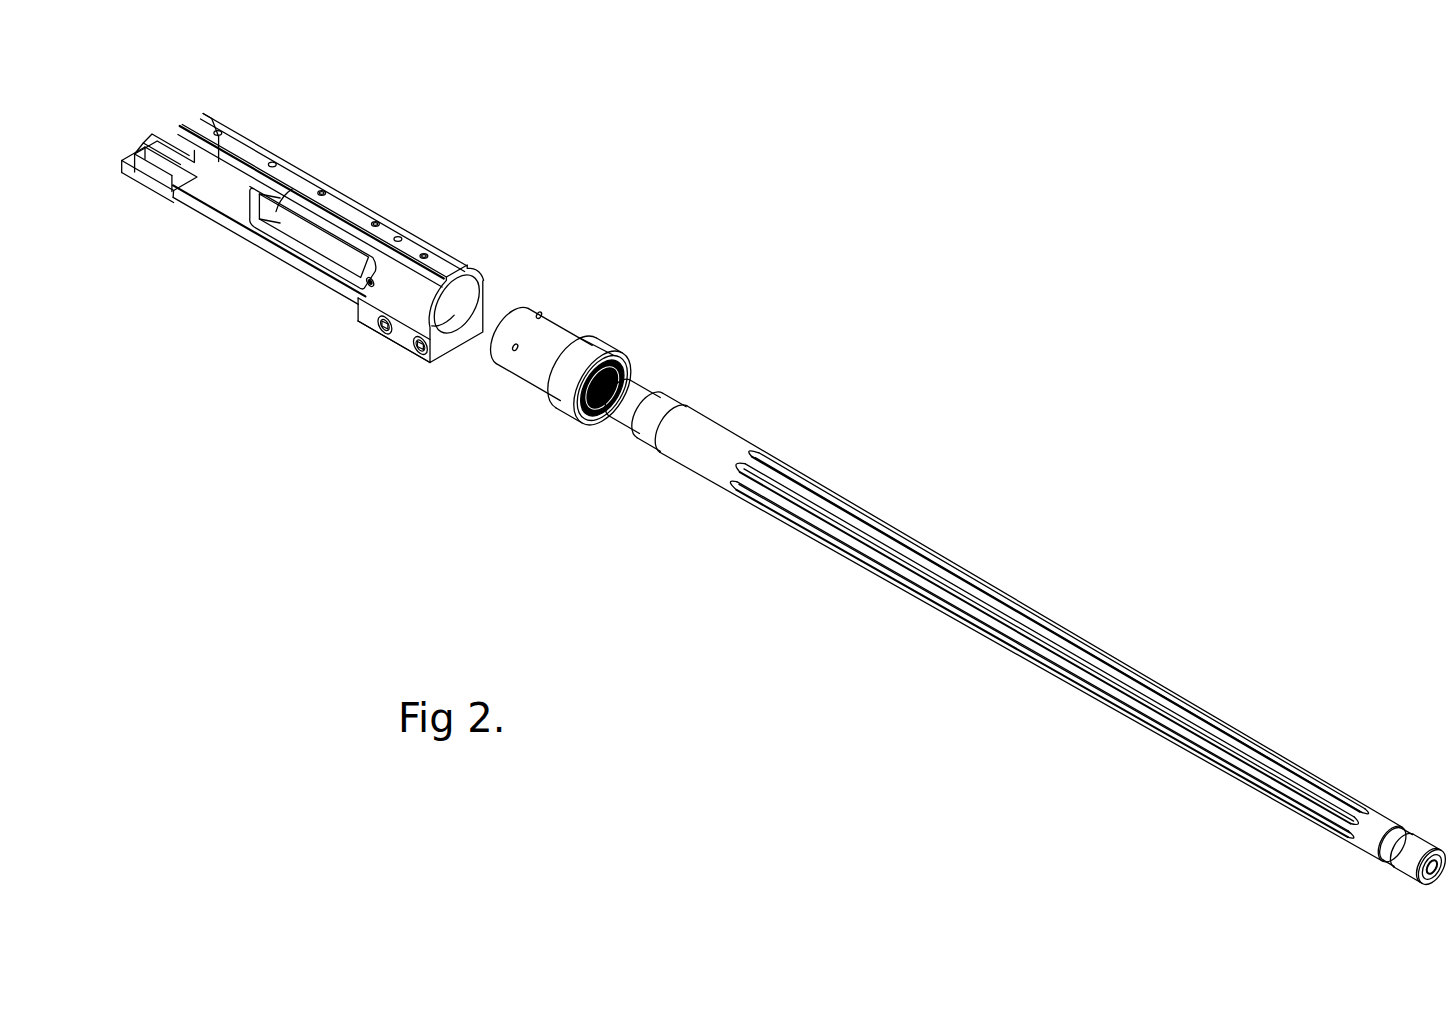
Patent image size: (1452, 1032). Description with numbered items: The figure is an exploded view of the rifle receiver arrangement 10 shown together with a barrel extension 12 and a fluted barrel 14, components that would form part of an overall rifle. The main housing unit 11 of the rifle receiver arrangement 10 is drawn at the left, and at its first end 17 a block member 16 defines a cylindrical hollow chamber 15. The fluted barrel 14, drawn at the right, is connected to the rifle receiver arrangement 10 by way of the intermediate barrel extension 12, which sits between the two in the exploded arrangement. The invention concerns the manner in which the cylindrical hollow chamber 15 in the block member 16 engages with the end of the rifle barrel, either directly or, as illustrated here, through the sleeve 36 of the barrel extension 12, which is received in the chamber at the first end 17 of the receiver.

The rifle receiver arrangement 10 is at (344, 120).
The main housing unit 11 is at (338, 193).
The barrel extension 12 is at (612, 332).
The fluted barrel 14 is at (1072, 605).
The cylindrical hollow chamber 15 is at (470, 300).
The block member 16 is at (463, 338).
The first end 17 is at (461, 240).
The sleeve 36 is at (555, 330).